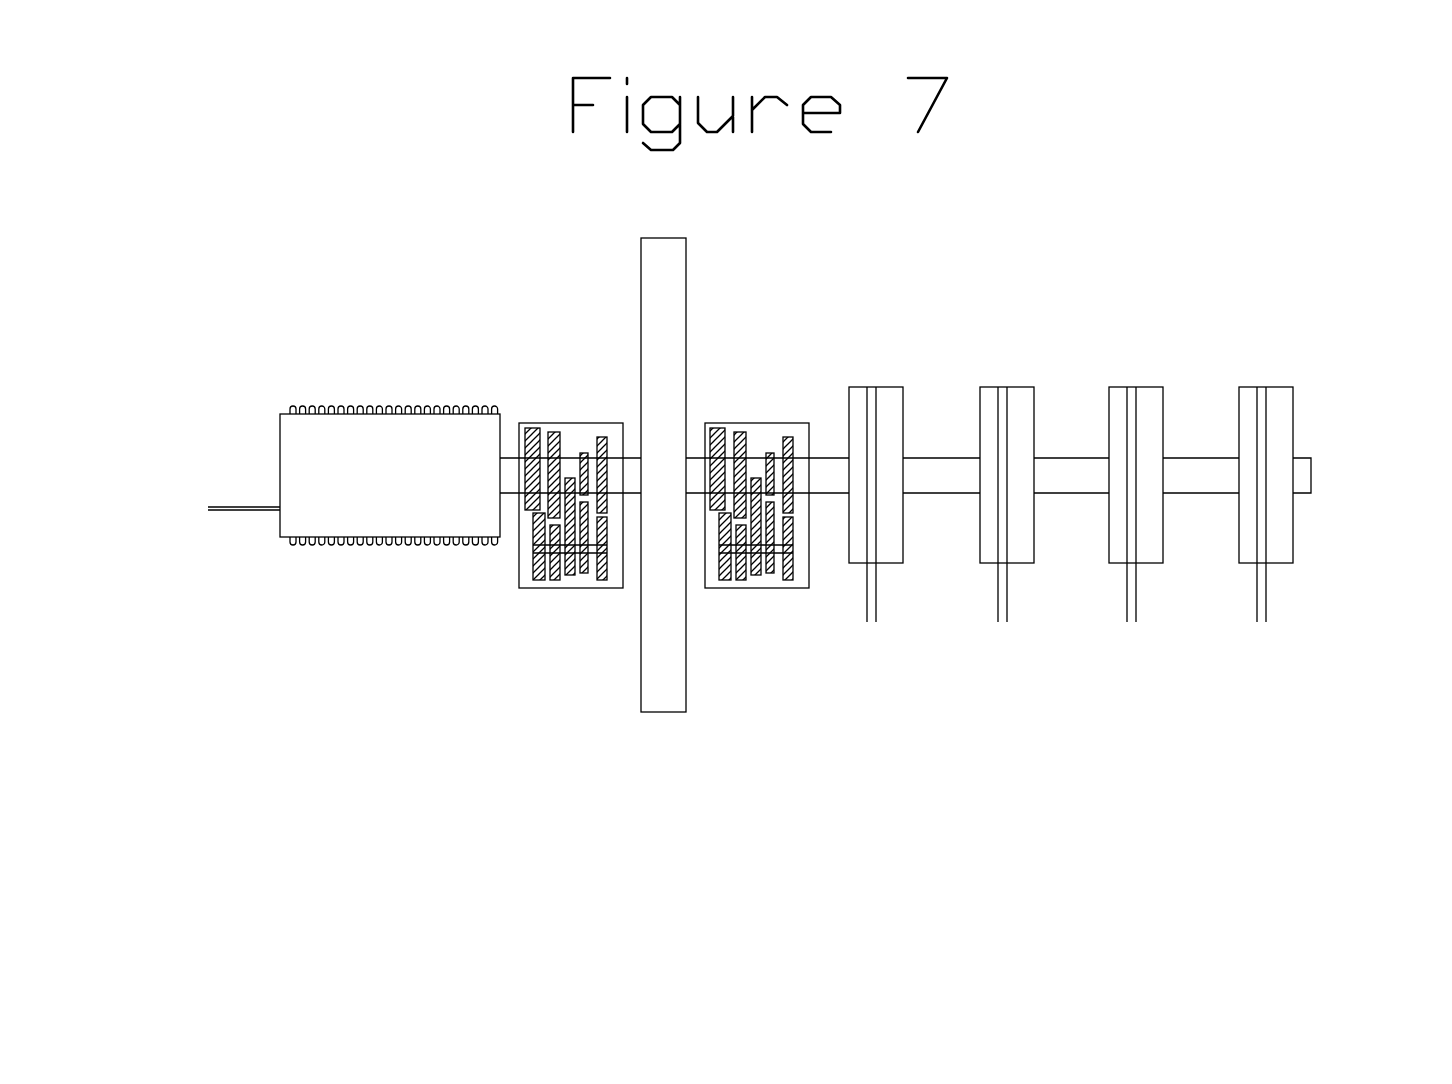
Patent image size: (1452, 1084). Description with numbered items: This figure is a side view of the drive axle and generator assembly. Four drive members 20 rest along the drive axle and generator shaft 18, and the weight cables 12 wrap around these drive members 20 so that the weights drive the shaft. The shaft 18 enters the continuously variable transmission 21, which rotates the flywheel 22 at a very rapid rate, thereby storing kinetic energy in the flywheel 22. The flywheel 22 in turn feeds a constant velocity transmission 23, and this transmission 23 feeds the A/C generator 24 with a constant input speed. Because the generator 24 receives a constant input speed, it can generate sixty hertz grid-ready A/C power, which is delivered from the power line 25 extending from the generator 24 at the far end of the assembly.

The weight cables 12 is at (883, 612).
The drive axle and generator shaft 18 is at (1323, 448).
The drive members 20 is at (903, 378).
The continuously variable transmission 21 is at (732, 417).
The flywheel 22 is at (632, 673).
The constant velocity transmission 23 is at (577, 397).
The A/C generator 24 is at (347, 565).
The power line 25 is at (242, 502).